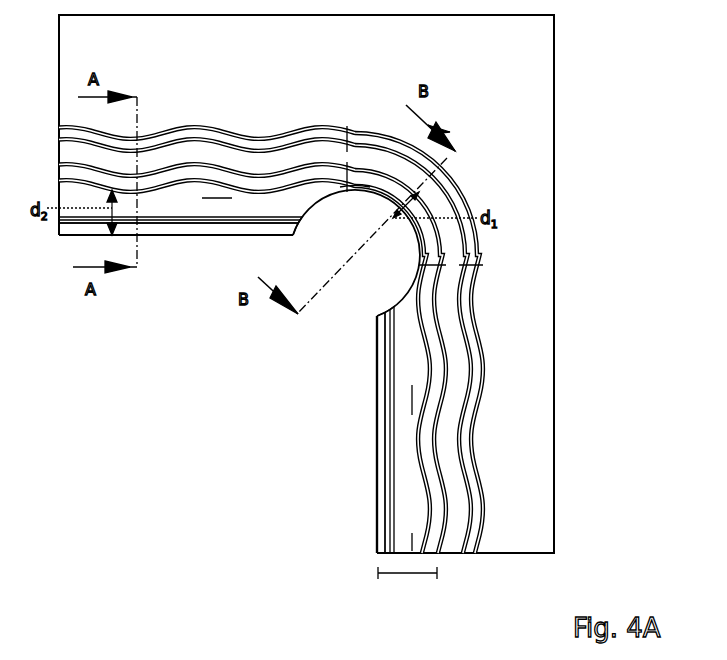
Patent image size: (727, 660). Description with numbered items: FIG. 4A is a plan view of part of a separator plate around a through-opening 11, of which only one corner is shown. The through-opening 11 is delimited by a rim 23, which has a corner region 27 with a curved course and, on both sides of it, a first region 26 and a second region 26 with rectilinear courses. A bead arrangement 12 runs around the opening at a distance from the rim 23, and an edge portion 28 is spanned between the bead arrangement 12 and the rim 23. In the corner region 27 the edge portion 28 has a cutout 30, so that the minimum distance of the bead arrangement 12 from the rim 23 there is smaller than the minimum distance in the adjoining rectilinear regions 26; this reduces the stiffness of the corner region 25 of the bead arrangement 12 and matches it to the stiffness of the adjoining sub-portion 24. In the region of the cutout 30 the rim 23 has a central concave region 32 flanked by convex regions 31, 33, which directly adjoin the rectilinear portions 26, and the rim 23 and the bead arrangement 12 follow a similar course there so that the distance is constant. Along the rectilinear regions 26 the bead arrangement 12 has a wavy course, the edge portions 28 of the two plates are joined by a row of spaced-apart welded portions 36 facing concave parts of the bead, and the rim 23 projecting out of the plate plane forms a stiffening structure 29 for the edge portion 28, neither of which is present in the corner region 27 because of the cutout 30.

The through-opening 11 is at (272, 389).
The bead arrangement 12 is at (440, 485).
The rim 23 is at (208, 238).
The sub-portion of the bead arrangement 24 is at (455, 538).
The corner region of the bead arrangement 25 is at (399, 213).
The first region 26 is at (183, 240).
The corner region 27 is at (406, 301).
The edge portion 28 is at (247, 205).
The stiffening structure 29 is at (78, 233).
The cutout 30 is at (410, 250).
The convex region 31 is at (291, 238).
The central concave region 32 is at (364, 186).
The convex region 33 is at (378, 322).
The welded portion 36 is at (82, 198).